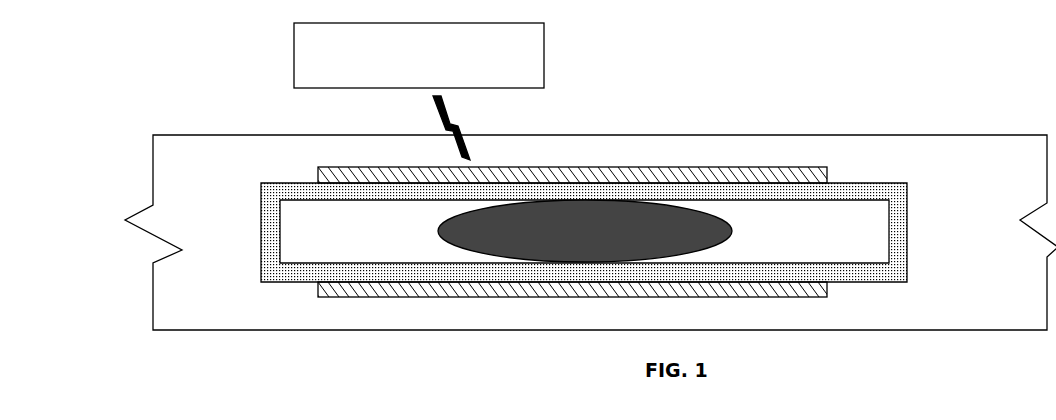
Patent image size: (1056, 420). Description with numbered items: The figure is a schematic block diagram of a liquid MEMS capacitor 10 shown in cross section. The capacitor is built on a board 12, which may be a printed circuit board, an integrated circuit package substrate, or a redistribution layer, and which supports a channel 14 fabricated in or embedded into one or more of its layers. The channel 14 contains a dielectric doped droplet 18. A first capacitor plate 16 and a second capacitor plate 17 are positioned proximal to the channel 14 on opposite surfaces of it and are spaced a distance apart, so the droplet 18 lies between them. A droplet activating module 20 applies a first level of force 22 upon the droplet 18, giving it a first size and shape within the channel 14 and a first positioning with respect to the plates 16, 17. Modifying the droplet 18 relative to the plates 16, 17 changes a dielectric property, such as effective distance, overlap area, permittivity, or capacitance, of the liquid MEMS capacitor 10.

The liquid MEMS capacitor 10 is at (381, 341).
The board 12 is at (590, 232).
The channel 14 is at (858, 182).
The first capacitor plate 16 is at (343, 166).
The second capacitor plate 17 is at (754, 298).
The dielectric doped droplet 18 is at (585, 231).
The droplet activating module 20 is at (419, 55).
The force 22 is at (491, 128).